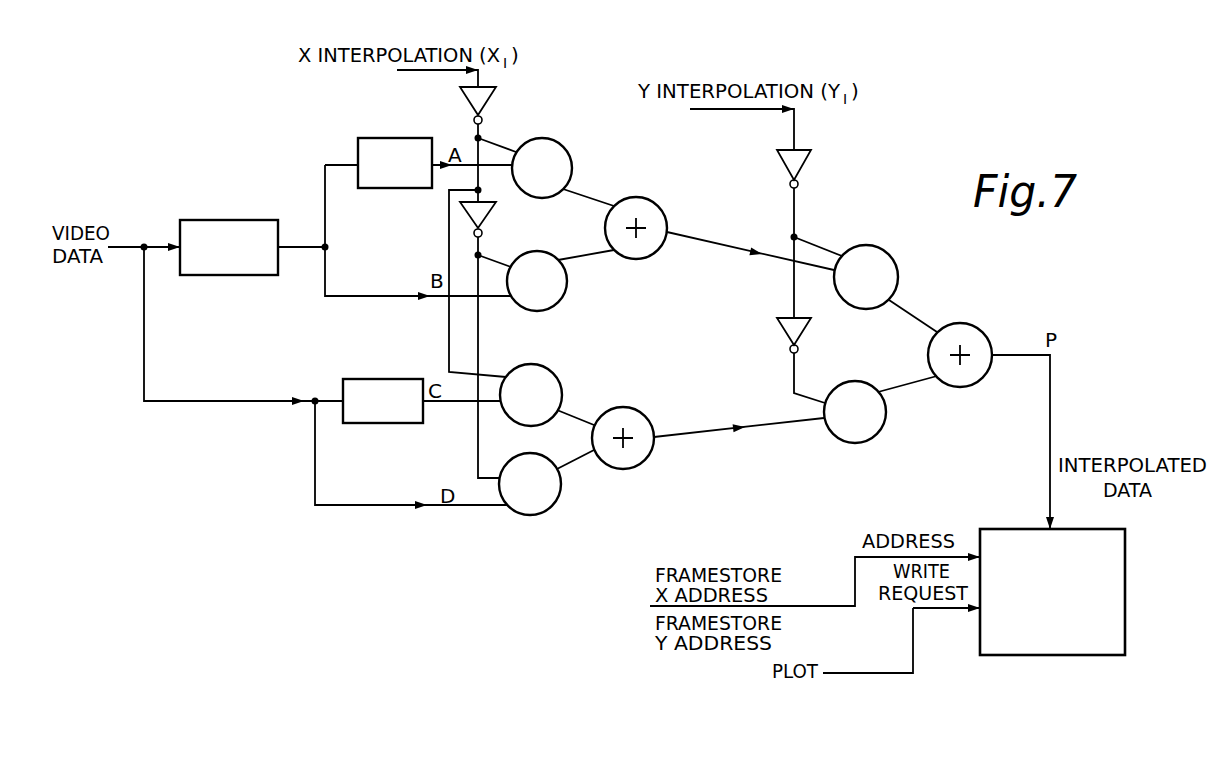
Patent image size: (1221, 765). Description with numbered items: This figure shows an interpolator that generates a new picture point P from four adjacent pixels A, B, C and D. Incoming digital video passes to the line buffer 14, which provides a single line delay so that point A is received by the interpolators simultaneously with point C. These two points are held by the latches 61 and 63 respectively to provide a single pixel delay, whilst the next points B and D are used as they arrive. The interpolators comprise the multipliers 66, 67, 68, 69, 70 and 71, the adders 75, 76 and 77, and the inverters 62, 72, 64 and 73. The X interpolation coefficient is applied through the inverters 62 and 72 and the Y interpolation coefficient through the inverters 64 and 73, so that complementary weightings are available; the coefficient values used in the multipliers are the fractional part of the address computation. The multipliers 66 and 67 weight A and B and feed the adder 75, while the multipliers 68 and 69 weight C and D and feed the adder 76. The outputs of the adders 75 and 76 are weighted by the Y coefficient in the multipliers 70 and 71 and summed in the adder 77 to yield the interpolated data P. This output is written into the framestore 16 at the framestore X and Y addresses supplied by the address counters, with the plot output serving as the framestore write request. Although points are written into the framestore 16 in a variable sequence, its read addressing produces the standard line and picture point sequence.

The line buffer 14 is at (252, 220).
The latch 61 is at (408, 138).
The latch 63 is at (396, 379).
The inverter 62 is at (486, 96).
The inverter 72 is at (486, 210).
The inverter 64 is at (801, 163).
The inverter 73 is at (801, 330).
The multiplier 66 is at (570, 164).
The multiplier 67 is at (565, 289).
The multiplier 68 is at (558, 382).
The multiplier 69 is at (547, 462).
The multiplier 70 is at (885, 257).
The multiplier 71 is at (885, 426).
The adder 75 is at (665, 217).
The adder 76 is at (645, 424).
The adder 77 is at (982, 340).
The framestore 16 is at (1113, 584).